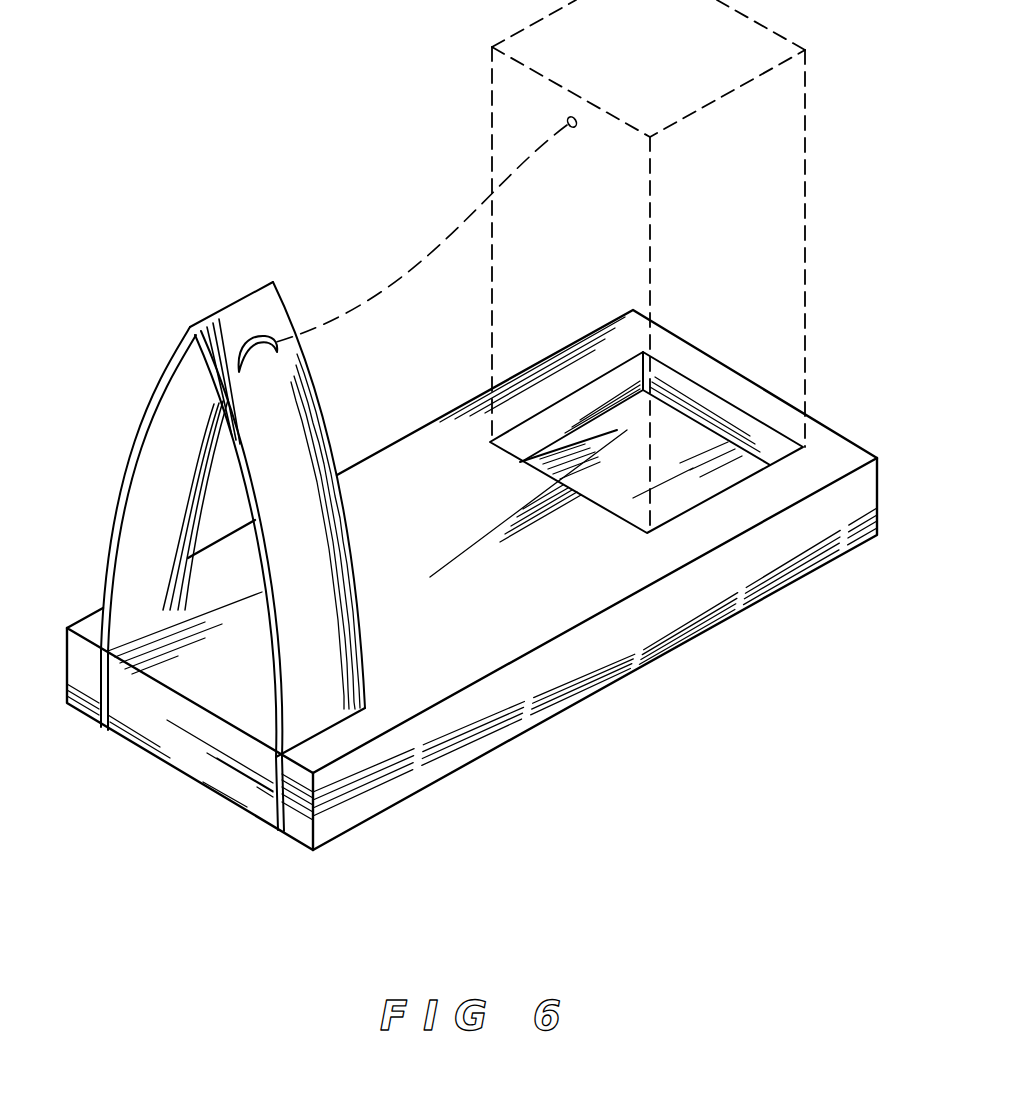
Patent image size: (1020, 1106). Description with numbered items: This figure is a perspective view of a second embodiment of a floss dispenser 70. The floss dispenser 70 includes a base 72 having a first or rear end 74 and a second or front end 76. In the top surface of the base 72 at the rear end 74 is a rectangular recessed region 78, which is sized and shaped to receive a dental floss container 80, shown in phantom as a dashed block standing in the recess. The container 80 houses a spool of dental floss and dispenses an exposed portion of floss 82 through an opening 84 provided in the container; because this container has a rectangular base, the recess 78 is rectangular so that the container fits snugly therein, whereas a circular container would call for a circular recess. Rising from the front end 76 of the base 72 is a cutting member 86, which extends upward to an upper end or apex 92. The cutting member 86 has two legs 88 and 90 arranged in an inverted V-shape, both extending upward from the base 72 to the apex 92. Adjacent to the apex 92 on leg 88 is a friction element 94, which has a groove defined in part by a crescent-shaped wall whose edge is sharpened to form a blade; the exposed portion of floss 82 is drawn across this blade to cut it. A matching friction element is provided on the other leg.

The floss dispenser 70 is at (322, 204).
The base 72 is at (478, 735).
The first or rear end 74 is at (758, 552).
The second or front end 76 is at (185, 750).
The rectangular recessed region 78 is at (748, 438).
The dental floss container 80 is at (808, 182).
The exposed portion of floss 82 is at (407, 283).
The opening 84 is at (577, 130).
The cutting member 86 is at (230, 537).
The leg 88 is at (307, 560).
The leg 90 is at (153, 508).
The apex 92 is at (227, 310).
The friction element 94 is at (260, 355).